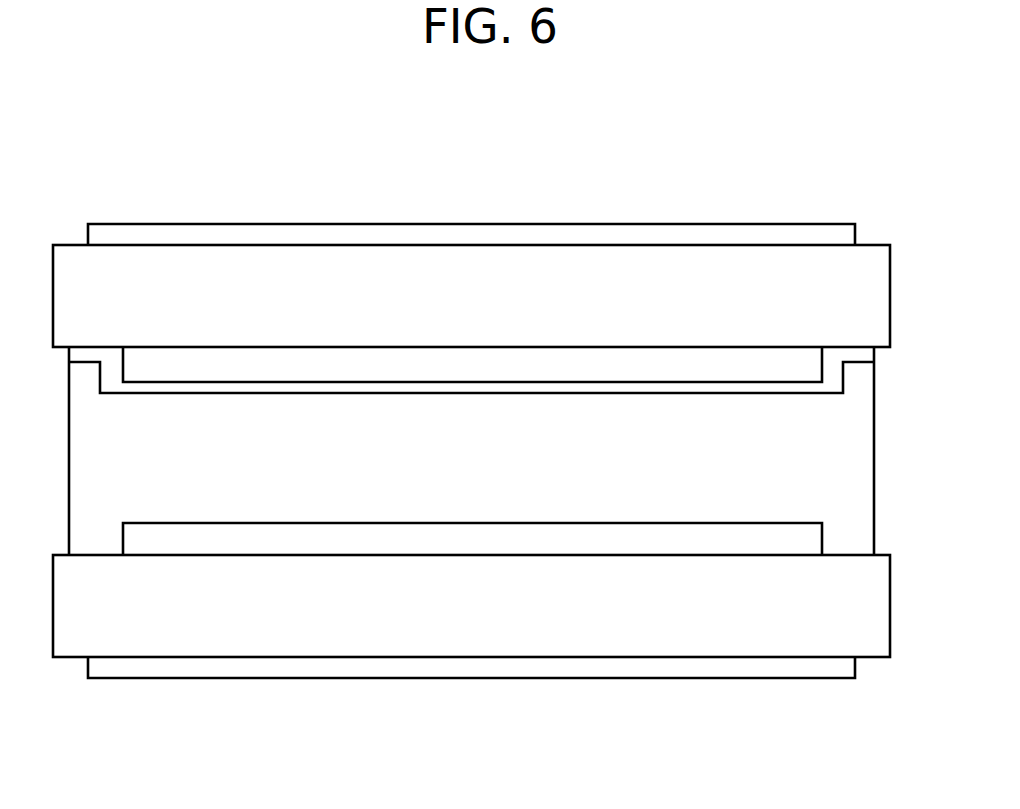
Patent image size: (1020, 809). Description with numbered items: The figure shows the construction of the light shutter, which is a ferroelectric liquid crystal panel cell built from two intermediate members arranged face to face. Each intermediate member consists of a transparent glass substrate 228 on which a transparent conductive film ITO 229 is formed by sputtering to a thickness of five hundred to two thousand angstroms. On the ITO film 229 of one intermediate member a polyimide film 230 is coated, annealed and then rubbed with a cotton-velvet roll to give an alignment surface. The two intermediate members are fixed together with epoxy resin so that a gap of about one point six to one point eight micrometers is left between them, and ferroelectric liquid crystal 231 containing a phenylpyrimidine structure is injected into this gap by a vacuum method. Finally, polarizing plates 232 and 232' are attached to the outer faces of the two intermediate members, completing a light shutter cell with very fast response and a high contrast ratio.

The transparent glass substrate 228 is at (350, 302).
The polarizing plate 232 is at (471, 202).
The polarizing plate 232' is at (471, 700).
The transparent conductive film ITO 229 is at (483, 362).
The polyimide film 230 is at (110, 378).
The ferroelectric liquid crystal 231 is at (793, 457).